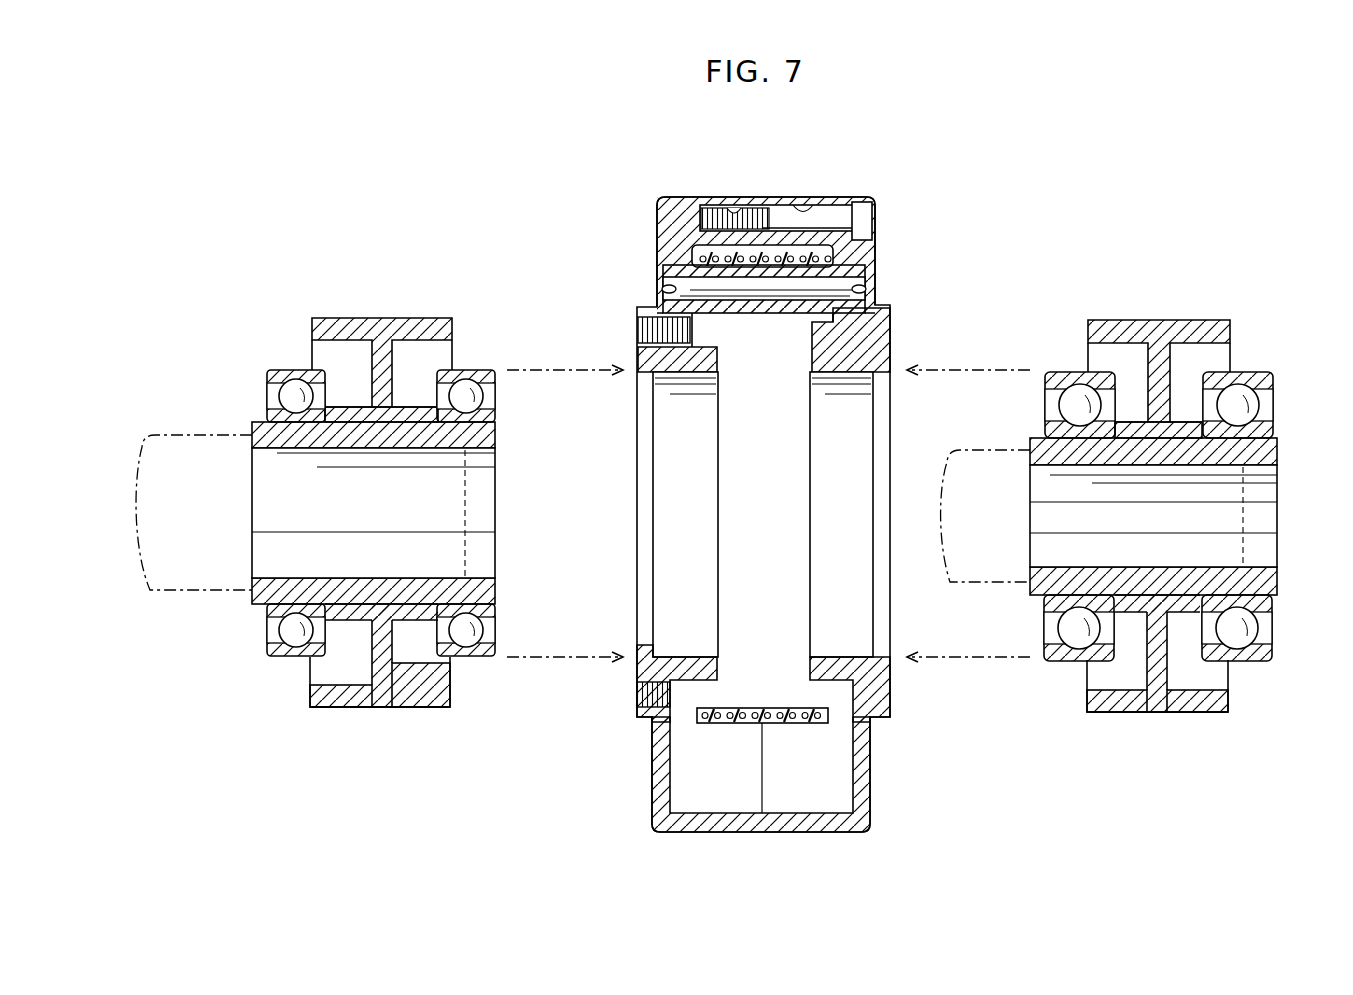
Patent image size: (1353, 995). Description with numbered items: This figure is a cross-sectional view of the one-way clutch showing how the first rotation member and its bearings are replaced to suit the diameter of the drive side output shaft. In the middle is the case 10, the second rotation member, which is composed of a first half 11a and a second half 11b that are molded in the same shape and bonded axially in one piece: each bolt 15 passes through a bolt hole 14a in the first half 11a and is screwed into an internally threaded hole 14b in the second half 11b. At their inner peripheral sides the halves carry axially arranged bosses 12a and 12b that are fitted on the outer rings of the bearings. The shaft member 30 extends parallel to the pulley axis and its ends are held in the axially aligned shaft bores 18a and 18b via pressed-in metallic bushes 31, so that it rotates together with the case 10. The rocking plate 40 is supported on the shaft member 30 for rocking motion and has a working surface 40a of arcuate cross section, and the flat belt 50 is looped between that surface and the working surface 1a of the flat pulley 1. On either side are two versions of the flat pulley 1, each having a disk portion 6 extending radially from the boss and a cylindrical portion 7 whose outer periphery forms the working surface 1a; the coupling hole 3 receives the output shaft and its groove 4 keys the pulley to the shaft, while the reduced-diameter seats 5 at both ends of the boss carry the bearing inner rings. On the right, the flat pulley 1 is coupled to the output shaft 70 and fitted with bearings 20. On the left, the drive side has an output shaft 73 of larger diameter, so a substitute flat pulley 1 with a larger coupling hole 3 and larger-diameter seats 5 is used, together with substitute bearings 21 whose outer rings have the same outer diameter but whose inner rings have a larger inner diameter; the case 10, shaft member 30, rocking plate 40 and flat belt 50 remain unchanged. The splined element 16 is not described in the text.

The flat pulley 1 is at (375, 710).
The working surface 1a is at (420, 708).
The coupling hole 3 is at (455, 578).
The groove 4 is at (455, 505).
The seat 5 is at (278, 410).
The disk portion 6 is at (430, 665).
The cylindrical portion 7 is at (450, 700).
The case 10 is at (820, 195).
The first half 11a is at (860, 197).
The second half 11b is at (681, 197).
The boss 12a is at (880, 700).
The boss 12b is at (640, 700).
The bolt hole 14a is at (790, 230).
The internally threaded hole 14b is at (738, 208).
The bolt 15 is at (875, 222).
The spline 16 is at (650, 330).
The shaft bore 18a is at (867, 291).
The shaft bore 18b is at (663, 291).
The bearing 20 is at (1078, 370).
The substitute bearing 21 is at (295, 368).
The shaft member 30 is at (728, 314).
The bush 31 is at (690, 252).
The rocking plate 40 is at (762, 318).
The working surface 40a is at (806, 280).
The flat belt 50 is at (722, 724).
The output shaft 70 is at (985, 450).
The output shaft 73 is at (240, 435).